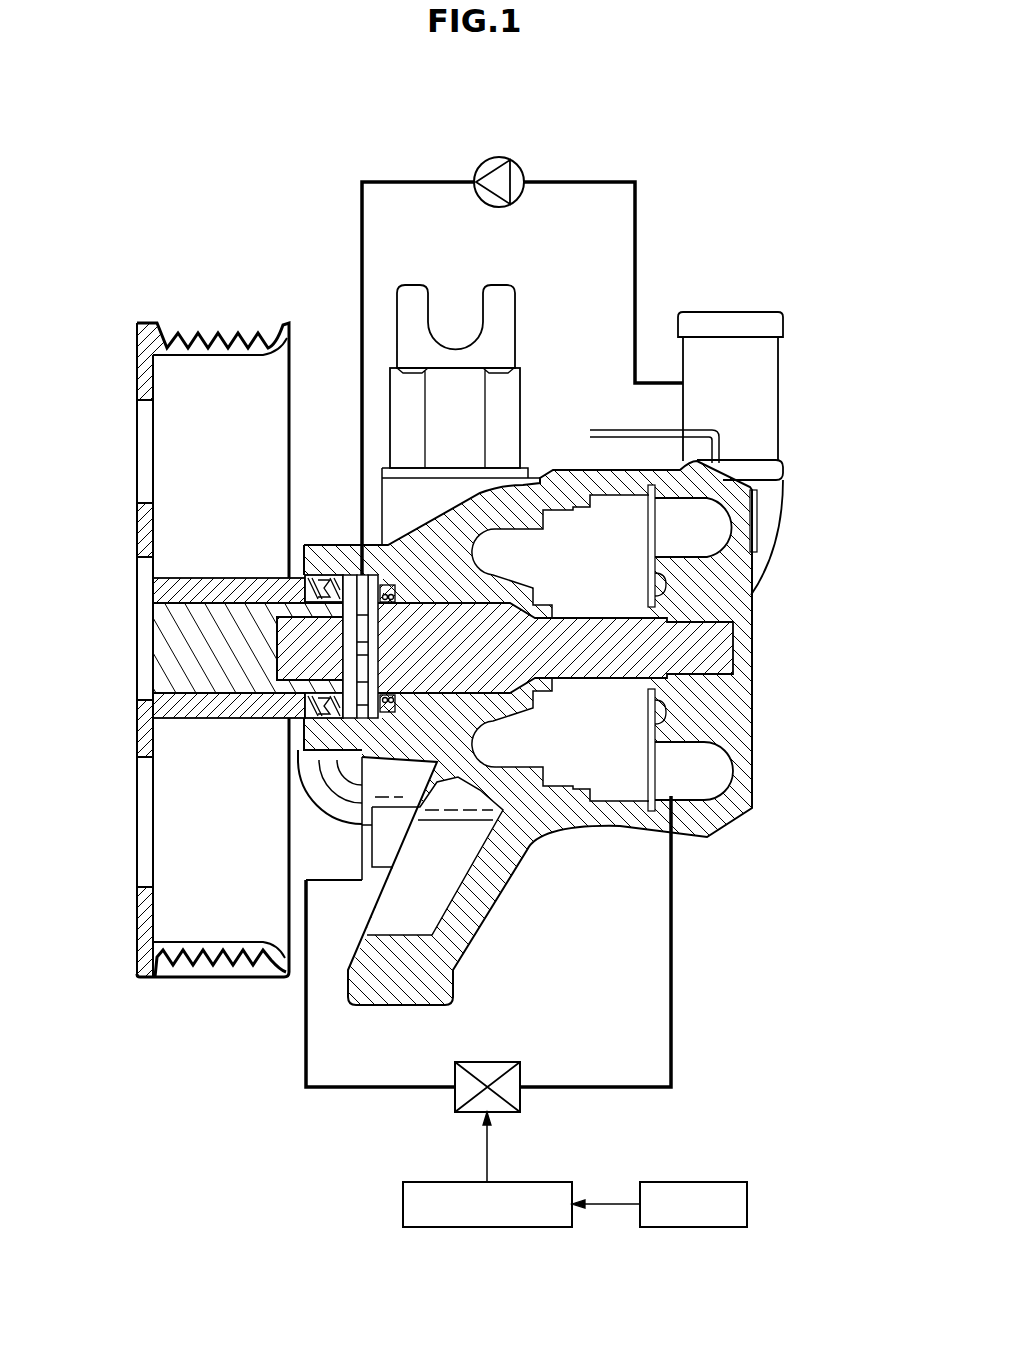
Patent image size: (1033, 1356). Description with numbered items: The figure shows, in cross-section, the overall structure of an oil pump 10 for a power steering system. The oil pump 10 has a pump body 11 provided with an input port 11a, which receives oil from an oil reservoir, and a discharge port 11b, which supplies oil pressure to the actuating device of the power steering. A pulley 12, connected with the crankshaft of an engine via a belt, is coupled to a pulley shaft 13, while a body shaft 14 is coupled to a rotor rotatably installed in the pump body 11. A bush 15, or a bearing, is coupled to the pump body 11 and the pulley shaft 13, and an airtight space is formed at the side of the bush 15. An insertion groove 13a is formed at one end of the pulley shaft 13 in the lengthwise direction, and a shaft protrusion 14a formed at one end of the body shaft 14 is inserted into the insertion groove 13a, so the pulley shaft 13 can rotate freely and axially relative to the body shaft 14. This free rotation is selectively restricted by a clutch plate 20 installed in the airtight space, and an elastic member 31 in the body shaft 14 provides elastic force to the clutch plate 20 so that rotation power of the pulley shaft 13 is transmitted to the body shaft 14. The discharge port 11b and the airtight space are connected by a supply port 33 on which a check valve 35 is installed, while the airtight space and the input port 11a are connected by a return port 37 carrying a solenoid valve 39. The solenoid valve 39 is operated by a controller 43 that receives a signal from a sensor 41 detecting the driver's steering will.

The oil pump 10 is at (787, 498).
The pump body 11 is at (503, 867).
The input port 11a is at (700, 771).
The discharge port 11b is at (779, 371).
The pulley 12 is at (137, 540).
The pulley shaft 13 is at (278, 666).
The insertion groove 13a is at (300, 624).
The body shaft 14 is at (712, 650).
The shaft protrusion 14a is at (302, 720).
The bush 15 is at (292, 726).
The clutch plate 20 is at (320, 600).
The elastic member 31 is at (388, 555).
The supply port 33 is at (418, 182).
The check valve 35 is at (497, 157).
The return port 37 is at (672, 980).
The solenoid valve 39 is at (489, 1062).
The sensor 41 is at (692, 1228).
The controller 43 is at (487, 1228).